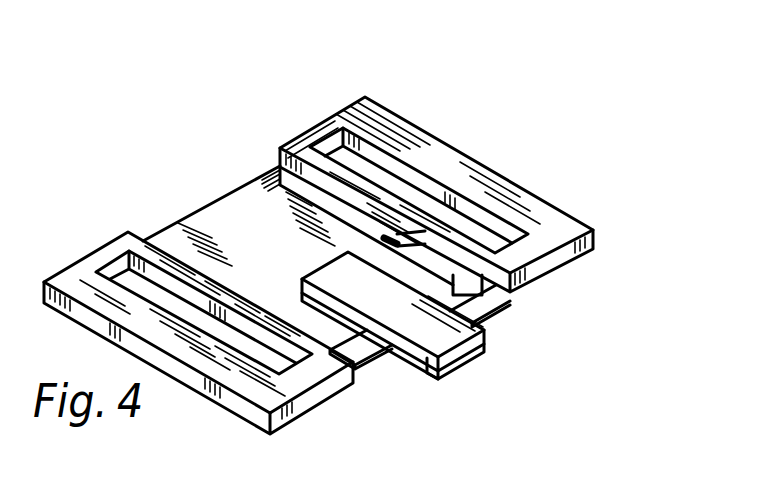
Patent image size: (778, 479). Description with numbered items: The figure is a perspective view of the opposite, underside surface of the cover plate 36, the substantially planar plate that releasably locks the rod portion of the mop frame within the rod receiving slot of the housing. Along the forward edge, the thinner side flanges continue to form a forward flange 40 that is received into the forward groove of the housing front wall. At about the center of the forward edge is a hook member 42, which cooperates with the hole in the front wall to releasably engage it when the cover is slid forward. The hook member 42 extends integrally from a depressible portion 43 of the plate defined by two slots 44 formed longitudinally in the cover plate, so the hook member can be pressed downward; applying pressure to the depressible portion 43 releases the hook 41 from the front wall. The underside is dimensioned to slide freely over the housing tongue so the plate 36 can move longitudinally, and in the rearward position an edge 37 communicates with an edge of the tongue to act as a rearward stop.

The cover plate 36 is at (598, 178).
The edge 37 is at (312, 272).
The forward flange 40 is at (316, 400).
The hook 41 is at (429, 374).
The hook member 42 is at (485, 320).
The depressible portion 43 is at (372, 352).
The slots 44 is at (395, 238).